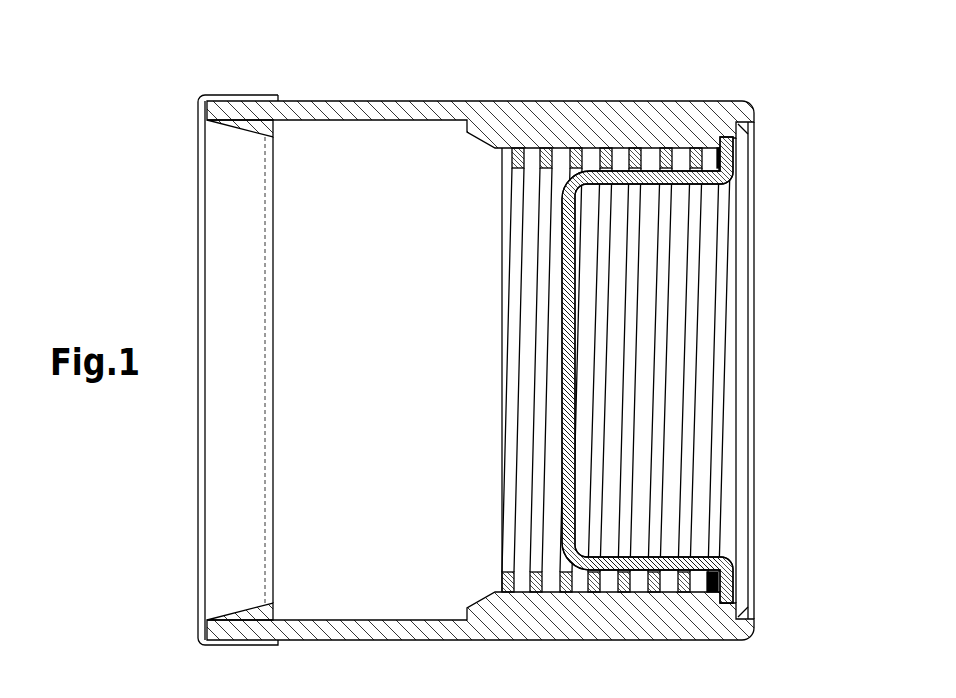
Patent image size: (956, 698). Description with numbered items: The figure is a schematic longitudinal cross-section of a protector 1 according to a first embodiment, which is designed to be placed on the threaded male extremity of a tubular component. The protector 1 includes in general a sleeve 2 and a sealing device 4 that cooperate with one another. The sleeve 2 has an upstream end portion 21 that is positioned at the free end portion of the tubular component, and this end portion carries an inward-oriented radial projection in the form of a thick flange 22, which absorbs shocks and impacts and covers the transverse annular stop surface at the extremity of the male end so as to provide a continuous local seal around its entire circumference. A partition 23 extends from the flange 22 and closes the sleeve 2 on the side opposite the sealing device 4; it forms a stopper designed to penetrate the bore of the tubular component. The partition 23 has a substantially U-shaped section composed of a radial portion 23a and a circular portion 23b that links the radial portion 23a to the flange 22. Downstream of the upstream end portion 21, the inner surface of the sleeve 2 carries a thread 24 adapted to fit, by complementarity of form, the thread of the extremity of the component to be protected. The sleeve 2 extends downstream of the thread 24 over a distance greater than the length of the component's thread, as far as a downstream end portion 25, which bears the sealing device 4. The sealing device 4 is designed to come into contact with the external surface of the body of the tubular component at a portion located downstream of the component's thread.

The protector 1 is at (512, 52).
The sleeve 2 is at (664, 106).
The upstream end portion 21 is at (716, 133).
The flange 22 is at (729, 159).
The partition 23 is at (572, 332).
The radial portion 23a is at (566, 456).
The circular portion 23b is at (655, 561).
The thread 24 is at (579, 165).
The downstream end portion 25 is at (298, 110).
The sealing device 4 is at (192, 93).